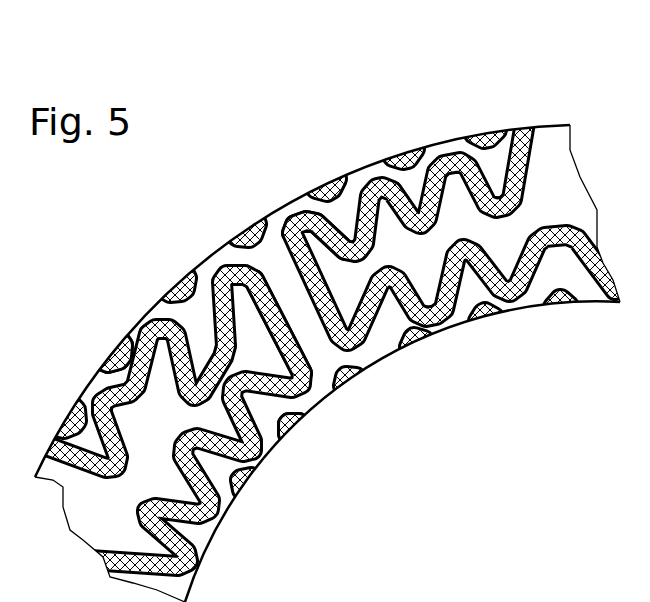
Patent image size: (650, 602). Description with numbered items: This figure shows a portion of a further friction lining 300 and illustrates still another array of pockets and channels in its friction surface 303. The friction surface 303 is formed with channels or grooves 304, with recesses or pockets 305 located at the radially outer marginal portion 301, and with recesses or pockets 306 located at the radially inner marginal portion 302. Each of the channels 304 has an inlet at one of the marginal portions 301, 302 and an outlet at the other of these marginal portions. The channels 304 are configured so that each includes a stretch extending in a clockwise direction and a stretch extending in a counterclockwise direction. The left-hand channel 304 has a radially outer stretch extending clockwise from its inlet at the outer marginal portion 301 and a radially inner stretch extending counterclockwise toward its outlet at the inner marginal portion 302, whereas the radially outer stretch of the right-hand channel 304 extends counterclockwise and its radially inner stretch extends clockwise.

The friction lining 300 is at (408, 108).
The radially outer marginal portion 301 is at (566, 125).
The radially inner marginal portion 302 is at (538, 310).
The friction surface 303 is at (278, 326).
The channel 304 is at (318, 235).
The pocket 305 is at (97, 337).
The pocket 306 is at (308, 443).